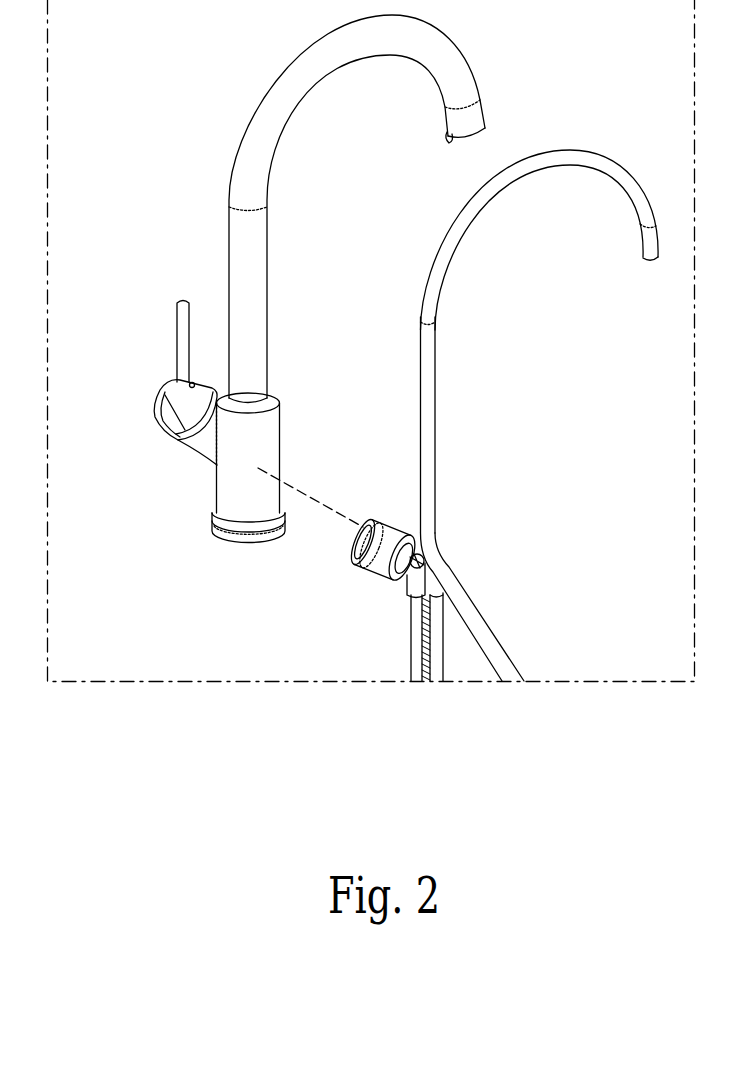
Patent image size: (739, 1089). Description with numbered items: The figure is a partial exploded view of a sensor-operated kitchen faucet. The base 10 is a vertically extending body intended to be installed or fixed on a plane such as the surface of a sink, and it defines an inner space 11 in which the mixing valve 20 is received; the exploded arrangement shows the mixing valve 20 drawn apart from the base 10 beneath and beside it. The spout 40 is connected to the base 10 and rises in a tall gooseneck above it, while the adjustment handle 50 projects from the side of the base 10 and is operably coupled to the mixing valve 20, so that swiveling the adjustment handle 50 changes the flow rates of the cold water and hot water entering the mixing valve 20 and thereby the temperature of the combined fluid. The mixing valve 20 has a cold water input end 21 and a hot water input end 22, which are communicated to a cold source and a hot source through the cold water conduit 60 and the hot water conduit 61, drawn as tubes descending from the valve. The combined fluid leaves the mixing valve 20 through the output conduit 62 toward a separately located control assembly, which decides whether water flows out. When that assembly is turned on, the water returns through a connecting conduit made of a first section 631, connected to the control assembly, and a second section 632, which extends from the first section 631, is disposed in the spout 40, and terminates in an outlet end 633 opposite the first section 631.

The base 10 is at (258, 447).
The inner space 11 is at (243, 552).
The mixing valve 20 is at (387, 517).
The cold water input end 21 is at (408, 597).
The hot water input end 22 is at (442, 592).
The spout 40 is at (265, 132).
The adjustment handle 50 is at (157, 395).
The cold water conduit 60 is at (410, 668).
The hot water conduit 61 is at (443, 665).
The output conduit 62 is at (427, 683).
The first section 631 is at (497, 652).
The second section 632 is at (430, 413).
The outlet end 633 is at (652, 263).